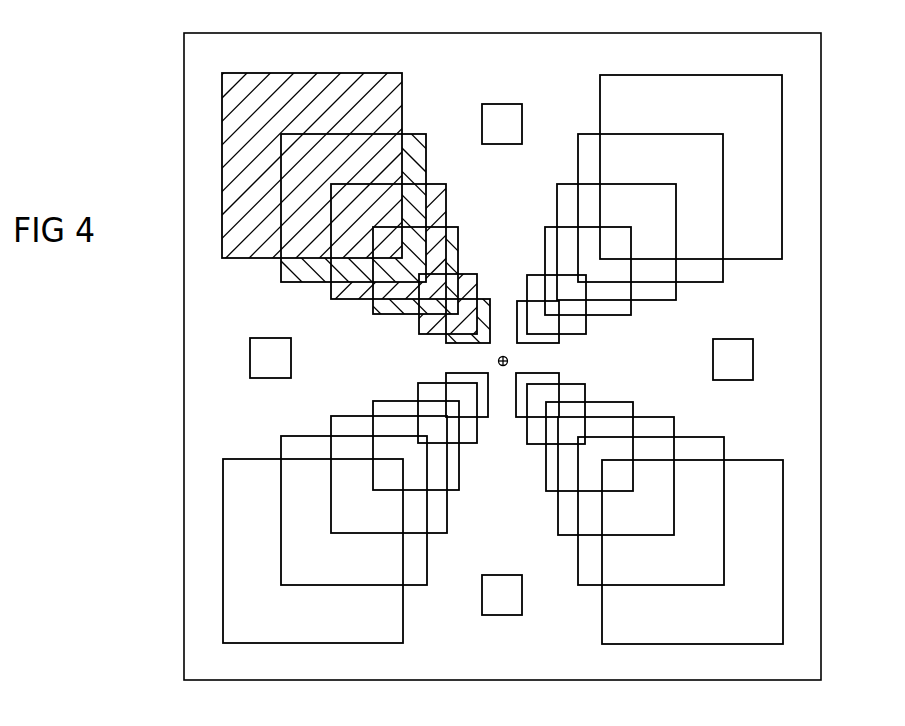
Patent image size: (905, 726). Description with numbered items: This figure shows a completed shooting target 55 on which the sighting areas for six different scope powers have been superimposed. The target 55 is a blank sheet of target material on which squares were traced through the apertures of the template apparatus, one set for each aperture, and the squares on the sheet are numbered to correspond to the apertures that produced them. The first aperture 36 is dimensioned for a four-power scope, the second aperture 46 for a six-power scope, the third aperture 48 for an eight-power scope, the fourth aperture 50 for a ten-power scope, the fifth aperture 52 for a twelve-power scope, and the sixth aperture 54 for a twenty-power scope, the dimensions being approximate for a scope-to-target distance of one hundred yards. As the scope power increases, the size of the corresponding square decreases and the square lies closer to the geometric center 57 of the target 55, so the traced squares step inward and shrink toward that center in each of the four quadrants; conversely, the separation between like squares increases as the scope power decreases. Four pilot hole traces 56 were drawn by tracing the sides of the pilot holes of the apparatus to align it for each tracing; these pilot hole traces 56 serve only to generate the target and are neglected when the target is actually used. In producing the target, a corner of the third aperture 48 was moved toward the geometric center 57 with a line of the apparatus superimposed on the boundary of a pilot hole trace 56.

The first aperture 36 is at (259, 259).
The second aperture 46 is at (309, 283).
The third aperture 48 is at (341, 300).
The fourth aperture 50 is at (385, 314).
The fifth aperture 52 is at (427, 337).
The sixth aperture 54 is at (477, 341).
The target 55 is at (473, 83).
The pilot hole trace 56 is at (745, 373).
The geometric center 57 is at (510, 360).